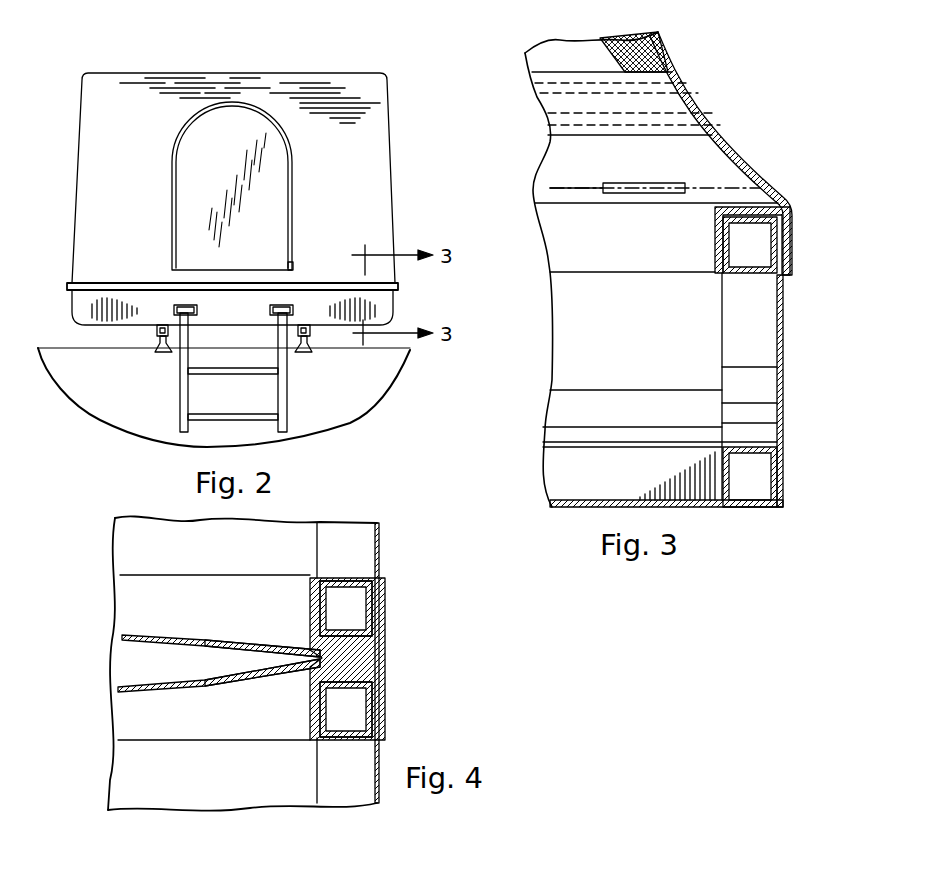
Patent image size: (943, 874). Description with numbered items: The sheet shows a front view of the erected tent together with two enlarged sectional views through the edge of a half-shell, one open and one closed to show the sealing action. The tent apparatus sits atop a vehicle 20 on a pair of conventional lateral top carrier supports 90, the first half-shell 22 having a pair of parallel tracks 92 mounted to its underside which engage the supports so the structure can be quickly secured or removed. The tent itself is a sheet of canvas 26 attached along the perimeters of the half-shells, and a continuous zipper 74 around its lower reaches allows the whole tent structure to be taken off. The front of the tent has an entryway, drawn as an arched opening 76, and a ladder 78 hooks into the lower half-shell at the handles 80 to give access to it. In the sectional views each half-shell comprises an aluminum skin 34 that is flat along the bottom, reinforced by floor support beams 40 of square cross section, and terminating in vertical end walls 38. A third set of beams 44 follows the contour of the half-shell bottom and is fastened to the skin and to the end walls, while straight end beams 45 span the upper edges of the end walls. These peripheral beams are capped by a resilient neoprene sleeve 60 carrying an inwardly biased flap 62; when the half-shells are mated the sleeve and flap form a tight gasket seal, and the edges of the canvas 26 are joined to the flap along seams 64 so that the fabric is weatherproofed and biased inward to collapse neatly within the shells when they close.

In FIG. 2, the vehicle 20 is at (62, 347).
In FIG. 2, the first half-shell 22 is at (63, 302).
In FIG. 2, the sheet of canvas 26 is at (380, 168).
In FIG. 3, the sheet of canvas 26 is at (660, 33).
In FIG. 4, the sheet of canvas 26 is at (175, 636).
In FIG. 3, the skin 34 is at (703, 508).
In FIG. 2, the vertical end walls 38 is at (153, 305).
In FIG. 3, the vertical end walls 38 is at (784, 345).
In FIG. 4, the vertical end walls 38 is at (410, 740).
In FIG. 3, the floor support beams 40 is at (620, 455).
In FIG. 3, the third set of beams 44 is at (743, 443).
In FIG. 3, the straight end beams 45 is at (745, 275).
In FIG. 4, the straight end beams 45 is at (330, 742).
In FIG. 3, the sleeve 60 is at (793, 236).
In FIG. 4, the sleeve 60 is at (386, 676).
In FIG. 3, the flap 62 is at (742, 157).
In FIG. 4, the flap 62 is at (298, 672).
In FIG. 3, the seams 64 is at (703, 108).
In FIG. 3, the zipper 74 is at (670, 50).
In FIG. 2, the window 76 is at (270, 205).
In FIG. 2, the ladder 78 is at (182, 395).
In FIG. 2, the handles 80 is at (271, 314).
In FIG. 2, the lateral top carrier supports 90 is at (310, 345).
In FIG. 2, the parallel tracks 92 is at (312, 331).